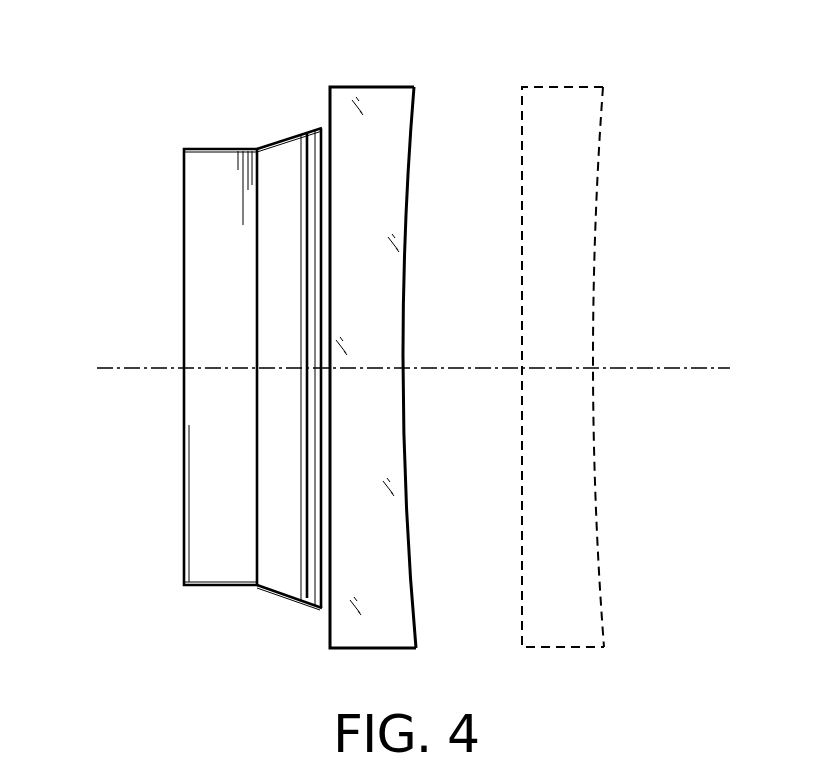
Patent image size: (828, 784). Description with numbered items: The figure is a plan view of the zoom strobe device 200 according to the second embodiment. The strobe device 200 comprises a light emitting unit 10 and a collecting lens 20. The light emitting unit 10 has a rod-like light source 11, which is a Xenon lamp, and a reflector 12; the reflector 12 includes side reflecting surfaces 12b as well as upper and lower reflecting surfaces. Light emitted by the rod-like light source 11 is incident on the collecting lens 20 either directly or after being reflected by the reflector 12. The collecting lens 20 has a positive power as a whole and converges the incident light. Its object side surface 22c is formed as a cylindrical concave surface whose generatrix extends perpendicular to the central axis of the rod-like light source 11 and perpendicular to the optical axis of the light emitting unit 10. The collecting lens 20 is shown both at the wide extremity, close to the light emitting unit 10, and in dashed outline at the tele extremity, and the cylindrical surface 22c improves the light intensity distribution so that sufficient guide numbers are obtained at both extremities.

The light emitting unit 10 is at (195, 110).
The rod-like light source 11 is at (196, 304).
The reflector 12 is at (286, 571).
The side reflecting surfaces 12b is at (288, 141).
The collecting lens 20 is at (388, 115).
The cylindrical concave surface 22c is at (405, 472).
The strobe device 200 is at (147, 466).